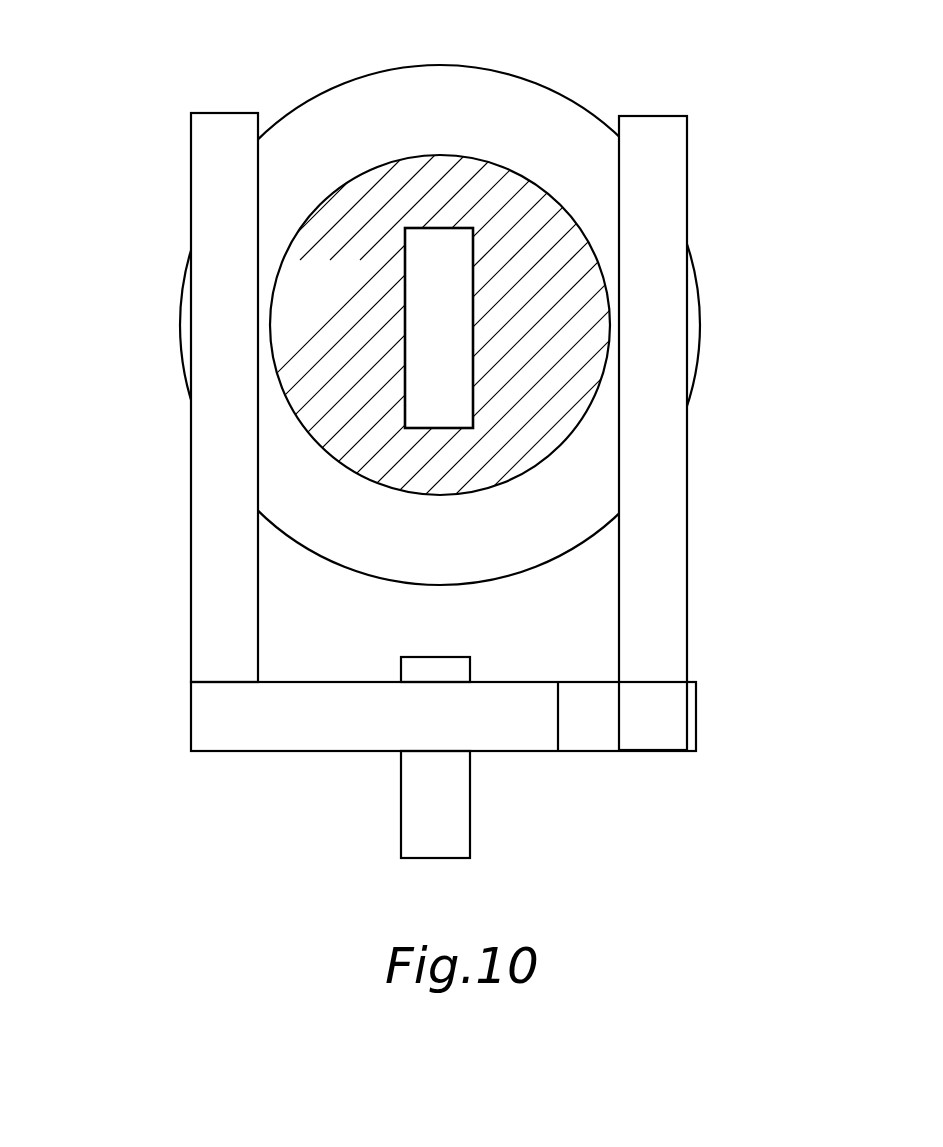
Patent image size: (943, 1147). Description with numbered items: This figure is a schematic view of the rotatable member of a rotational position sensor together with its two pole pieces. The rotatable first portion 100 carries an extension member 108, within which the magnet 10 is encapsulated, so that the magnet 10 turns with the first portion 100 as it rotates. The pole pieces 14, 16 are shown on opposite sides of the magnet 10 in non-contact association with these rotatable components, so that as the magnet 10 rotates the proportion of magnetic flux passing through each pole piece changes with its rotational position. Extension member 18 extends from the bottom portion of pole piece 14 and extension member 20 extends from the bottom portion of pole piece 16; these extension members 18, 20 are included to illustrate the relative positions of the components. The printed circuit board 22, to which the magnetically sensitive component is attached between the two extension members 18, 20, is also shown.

The first portion 100 is at (418, 88).
The extension member 108 is at (360, 203).
The magnet 10 is at (428, 325).
The pole piece 14 is at (230, 470).
The pole piece 16 is at (655, 497).
The extension member 18 is at (202, 710).
The extension member 20 is at (592, 715).
The printed circuit board 22 is at (432, 831).